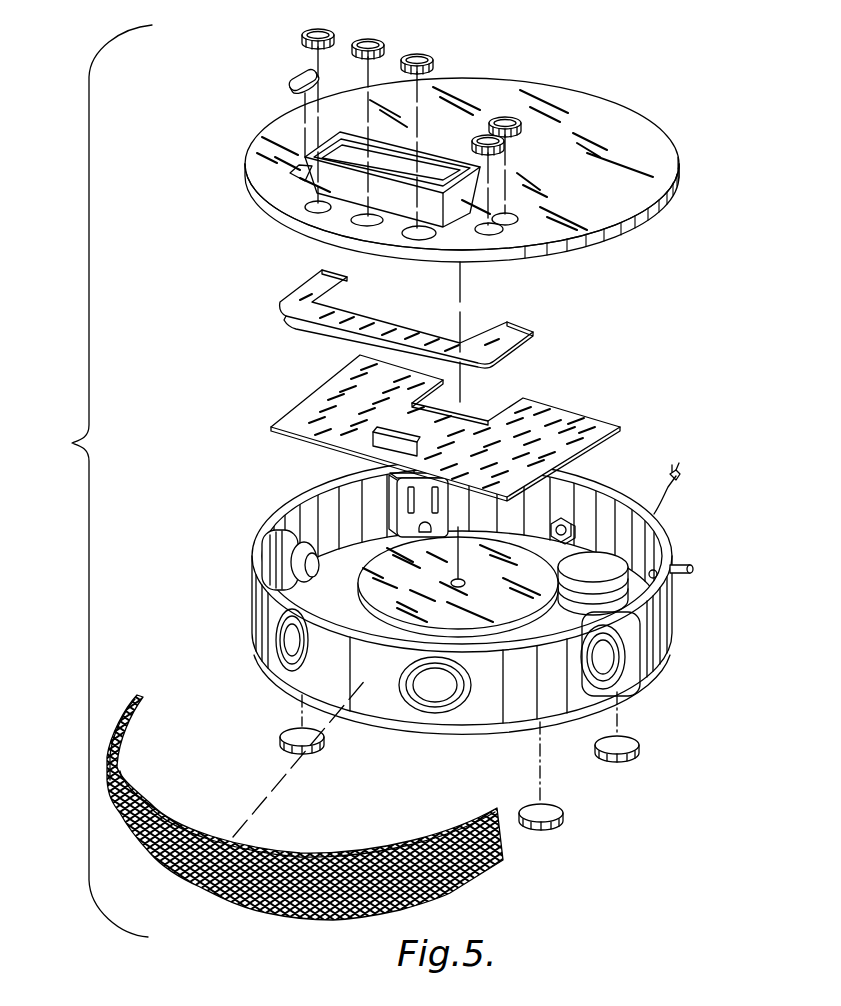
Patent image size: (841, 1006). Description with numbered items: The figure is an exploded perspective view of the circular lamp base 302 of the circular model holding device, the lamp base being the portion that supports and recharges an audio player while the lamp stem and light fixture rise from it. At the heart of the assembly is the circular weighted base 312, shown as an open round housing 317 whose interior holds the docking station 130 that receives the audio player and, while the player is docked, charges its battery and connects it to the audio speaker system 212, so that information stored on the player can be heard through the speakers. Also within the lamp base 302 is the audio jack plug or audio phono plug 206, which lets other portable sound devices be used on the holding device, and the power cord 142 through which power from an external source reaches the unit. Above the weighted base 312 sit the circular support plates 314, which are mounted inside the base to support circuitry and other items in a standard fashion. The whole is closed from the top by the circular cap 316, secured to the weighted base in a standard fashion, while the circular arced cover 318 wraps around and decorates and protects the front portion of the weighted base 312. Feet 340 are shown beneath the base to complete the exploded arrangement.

The docking station 130 is at (427, 157).
The power cord 142 is at (673, 497).
The audio jack plug or audio phono plug 206 is at (683, 567).
The audio speaker system 212 is at (280, 562).
The circular lamp base 302 is at (91, 481).
The circular weighted base 312 is at (395, 556).
The circular support plates 314 is at (330, 378).
The circular cap 316 is at (615, 107).
The housing 317 is at (672, 623).
The circular arced cover 318 is at (323, 908).
The feet 340 is at (630, 742).